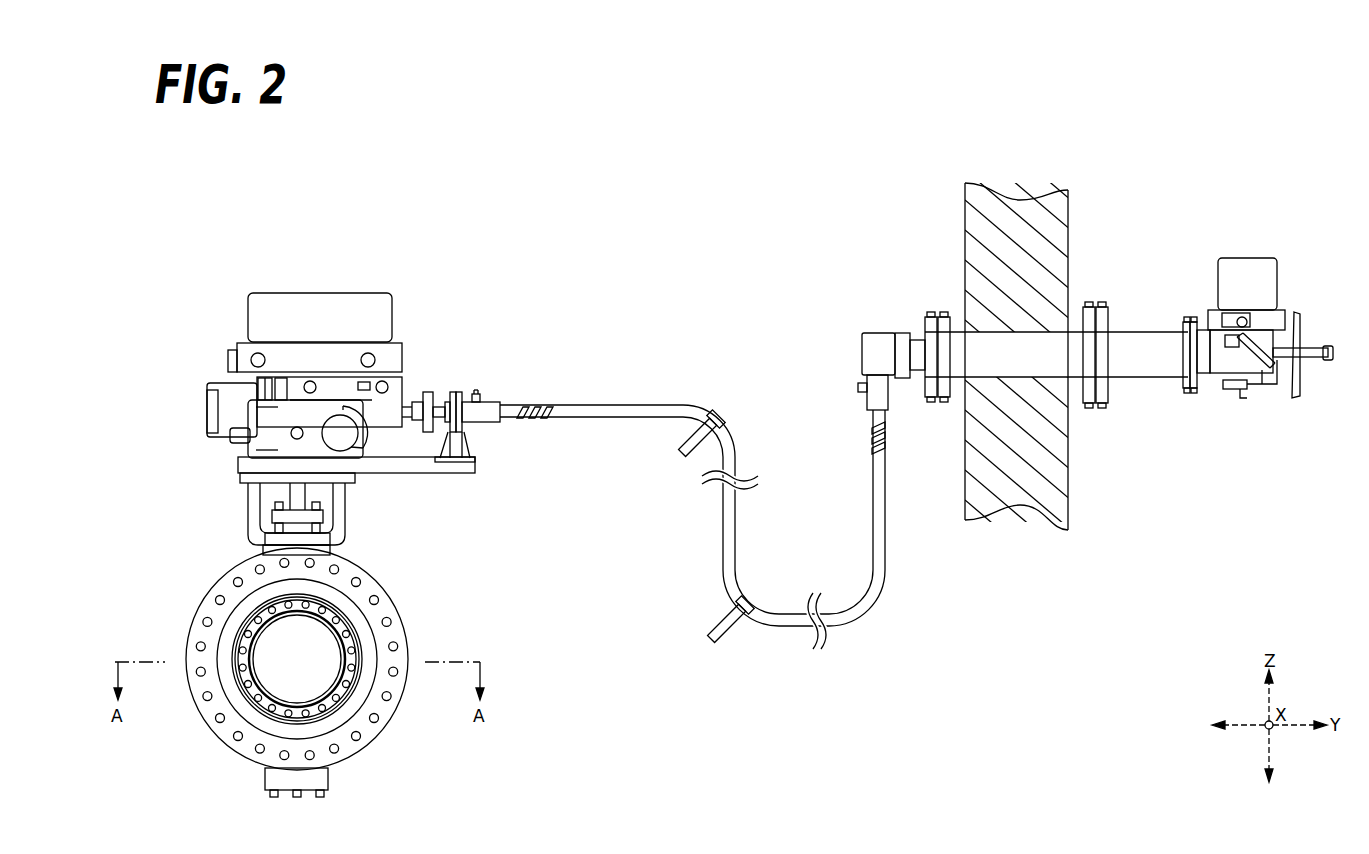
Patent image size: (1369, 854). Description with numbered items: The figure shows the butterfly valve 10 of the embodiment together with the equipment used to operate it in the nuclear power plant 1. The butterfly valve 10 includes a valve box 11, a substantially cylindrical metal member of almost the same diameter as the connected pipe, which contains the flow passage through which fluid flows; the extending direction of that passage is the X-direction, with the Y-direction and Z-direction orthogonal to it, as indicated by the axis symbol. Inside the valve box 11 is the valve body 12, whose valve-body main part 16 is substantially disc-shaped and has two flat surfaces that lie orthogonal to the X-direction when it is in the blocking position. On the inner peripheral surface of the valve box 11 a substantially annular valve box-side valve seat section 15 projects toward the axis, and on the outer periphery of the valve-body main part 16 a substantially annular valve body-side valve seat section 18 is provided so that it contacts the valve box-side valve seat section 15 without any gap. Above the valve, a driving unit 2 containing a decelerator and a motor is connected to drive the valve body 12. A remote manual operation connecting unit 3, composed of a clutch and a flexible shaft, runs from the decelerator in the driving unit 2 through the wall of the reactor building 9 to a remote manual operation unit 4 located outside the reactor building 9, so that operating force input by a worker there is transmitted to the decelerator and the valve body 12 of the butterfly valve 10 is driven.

The nuclear power plant 1 is at (758, 268).
The driving unit 2 is at (347, 293).
The remote manual operation connecting unit 3 is at (672, 405).
The remote manual operation unit 4 is at (1300, 313).
The reactor building 9 is at (1068, 240).
The butterfly valve 10 is at (375, 745).
The valve box 11 is at (367, 575).
The valve body 12 is at (330, 732).
The valve box-side valve seat section 15 is at (358, 630).
The valve-body main part 16 is at (322, 682).
The valve body-side valve seat section 18 is at (363, 647).